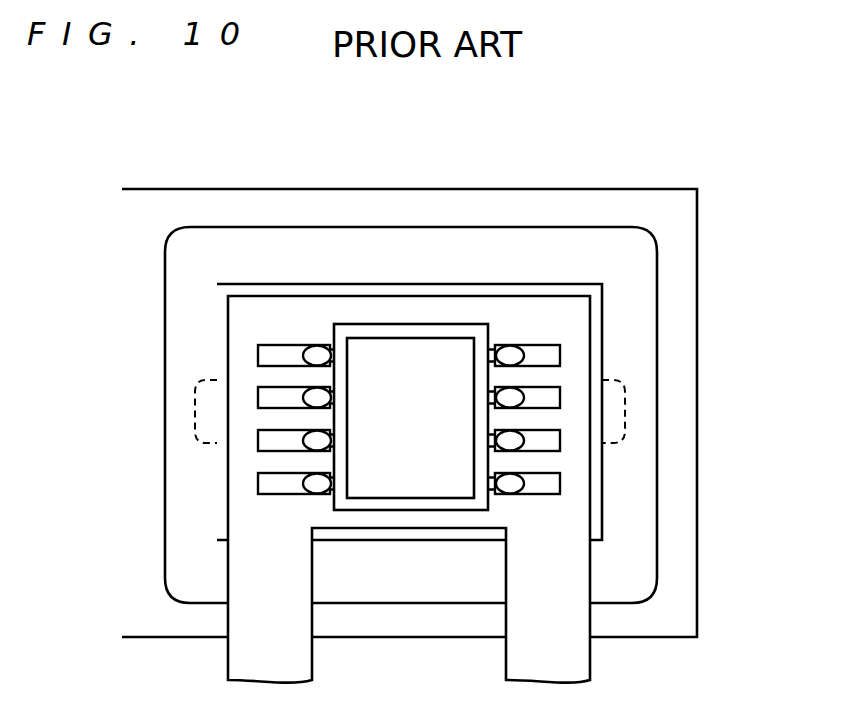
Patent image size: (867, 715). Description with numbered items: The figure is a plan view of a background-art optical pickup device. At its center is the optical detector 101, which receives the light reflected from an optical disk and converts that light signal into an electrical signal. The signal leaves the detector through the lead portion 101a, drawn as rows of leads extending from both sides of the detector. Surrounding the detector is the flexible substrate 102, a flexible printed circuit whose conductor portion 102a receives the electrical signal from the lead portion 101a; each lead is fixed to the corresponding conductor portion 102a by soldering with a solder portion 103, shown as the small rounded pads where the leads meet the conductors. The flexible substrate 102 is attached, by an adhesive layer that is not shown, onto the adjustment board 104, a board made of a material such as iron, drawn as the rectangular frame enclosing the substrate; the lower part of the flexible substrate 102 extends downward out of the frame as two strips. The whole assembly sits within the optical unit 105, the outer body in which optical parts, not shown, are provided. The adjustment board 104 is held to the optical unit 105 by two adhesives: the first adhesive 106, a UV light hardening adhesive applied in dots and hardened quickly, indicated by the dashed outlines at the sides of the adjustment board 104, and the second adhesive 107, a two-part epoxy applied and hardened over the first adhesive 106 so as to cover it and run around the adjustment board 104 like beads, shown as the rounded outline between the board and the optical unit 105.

The optical detector 101 is at (406, 325).
The lead portion 101a is at (487, 340).
The flexible substrate 102 is at (252, 310).
The conductor portion 102a is at (548, 478).
The solder portion 103 is at (314, 352).
The adjustment board 104 is at (585, 292).
The optical unit 105 is at (687, 254).
The first adhesive 106 is at (623, 421).
The second adhesive 107 is at (648, 329).